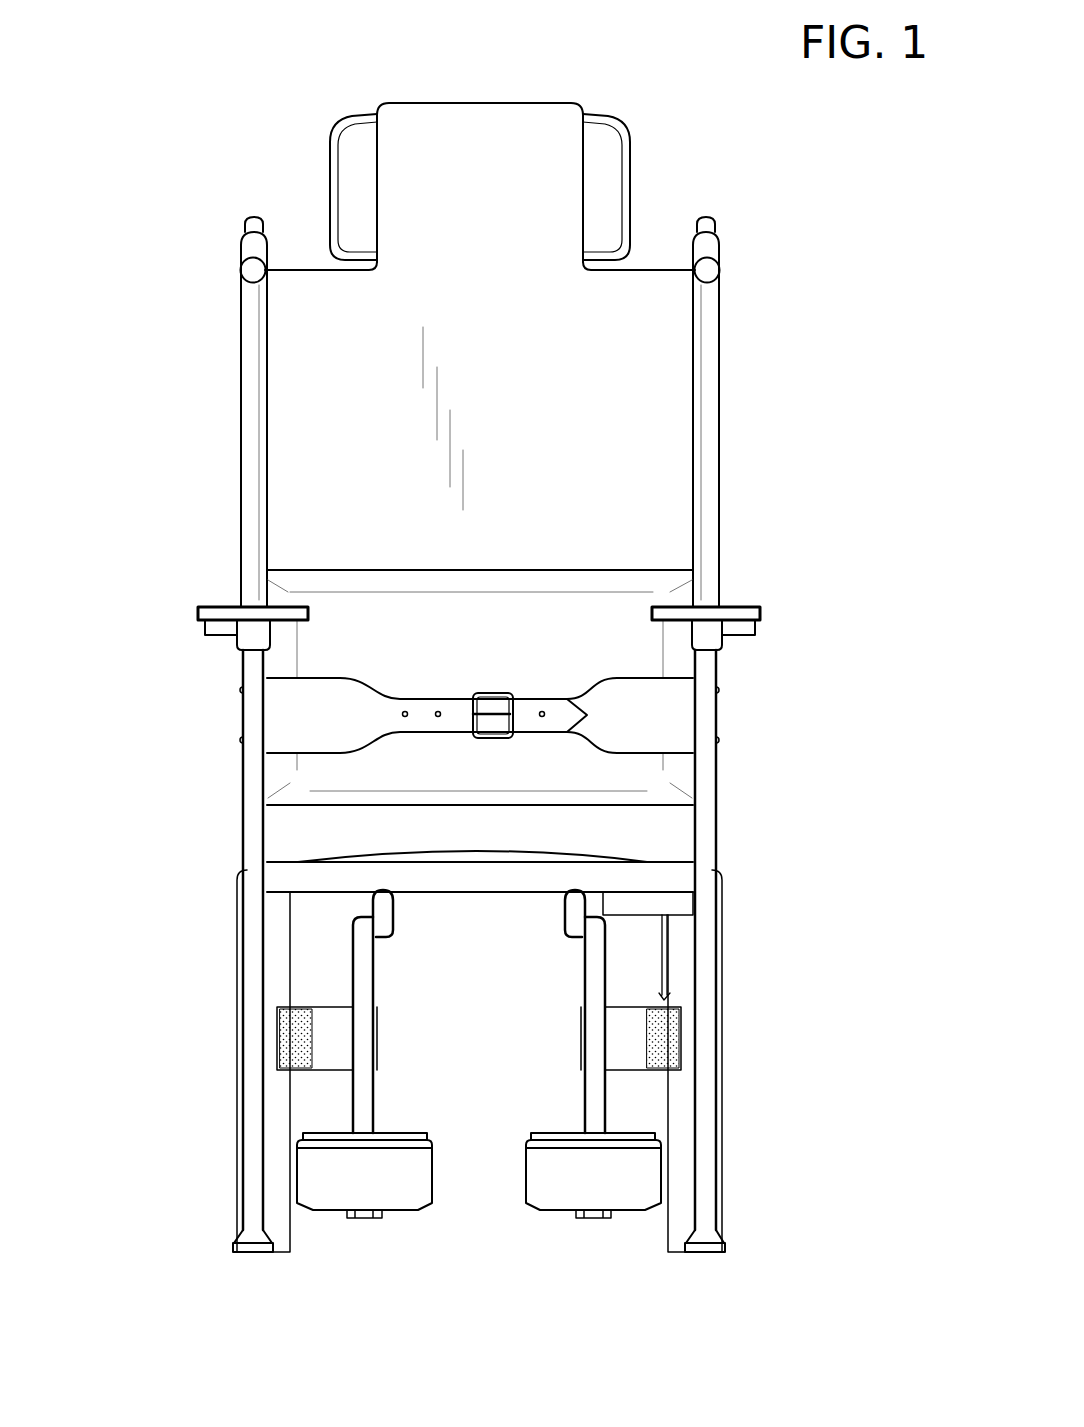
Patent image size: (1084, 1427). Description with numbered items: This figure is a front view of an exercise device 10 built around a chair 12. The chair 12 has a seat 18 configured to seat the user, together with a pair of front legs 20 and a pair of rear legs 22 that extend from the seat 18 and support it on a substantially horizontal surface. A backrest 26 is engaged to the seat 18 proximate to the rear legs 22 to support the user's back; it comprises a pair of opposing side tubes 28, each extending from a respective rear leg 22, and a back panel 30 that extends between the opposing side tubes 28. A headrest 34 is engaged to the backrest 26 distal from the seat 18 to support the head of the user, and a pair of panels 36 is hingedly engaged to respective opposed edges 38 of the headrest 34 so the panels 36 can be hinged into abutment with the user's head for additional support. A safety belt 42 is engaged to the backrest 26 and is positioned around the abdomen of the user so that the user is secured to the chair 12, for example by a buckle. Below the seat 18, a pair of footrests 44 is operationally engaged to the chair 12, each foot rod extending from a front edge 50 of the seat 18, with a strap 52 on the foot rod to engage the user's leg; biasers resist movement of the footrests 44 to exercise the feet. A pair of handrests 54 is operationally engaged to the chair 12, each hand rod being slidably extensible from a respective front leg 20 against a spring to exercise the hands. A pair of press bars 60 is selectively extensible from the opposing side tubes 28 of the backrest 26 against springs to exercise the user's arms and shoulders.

The exercise device 10 is at (645, 97).
The chair 12 is at (718, 795).
The seat 18 is at (640, 878).
The front legs 20 is at (705, 1197).
The rear legs 22 is at (277, 949).
The backrest 26 is at (645, 343).
The opposing side tubes 28 is at (705, 455).
The back panel 30 is at (325, 360).
The headrest 34 is at (528, 163).
The panels 36 is at (360, 205).
The opposed edge 38 is at (582, 187).
The safety belt 42 is at (298, 713).
The footrests 44 is at (380, 1178).
The front edge 50 is at (298, 873).
The strap 52 is at (330, 1041).
The handrests 54 is at (292, 607).
The press bars 60 is at (695, 270).